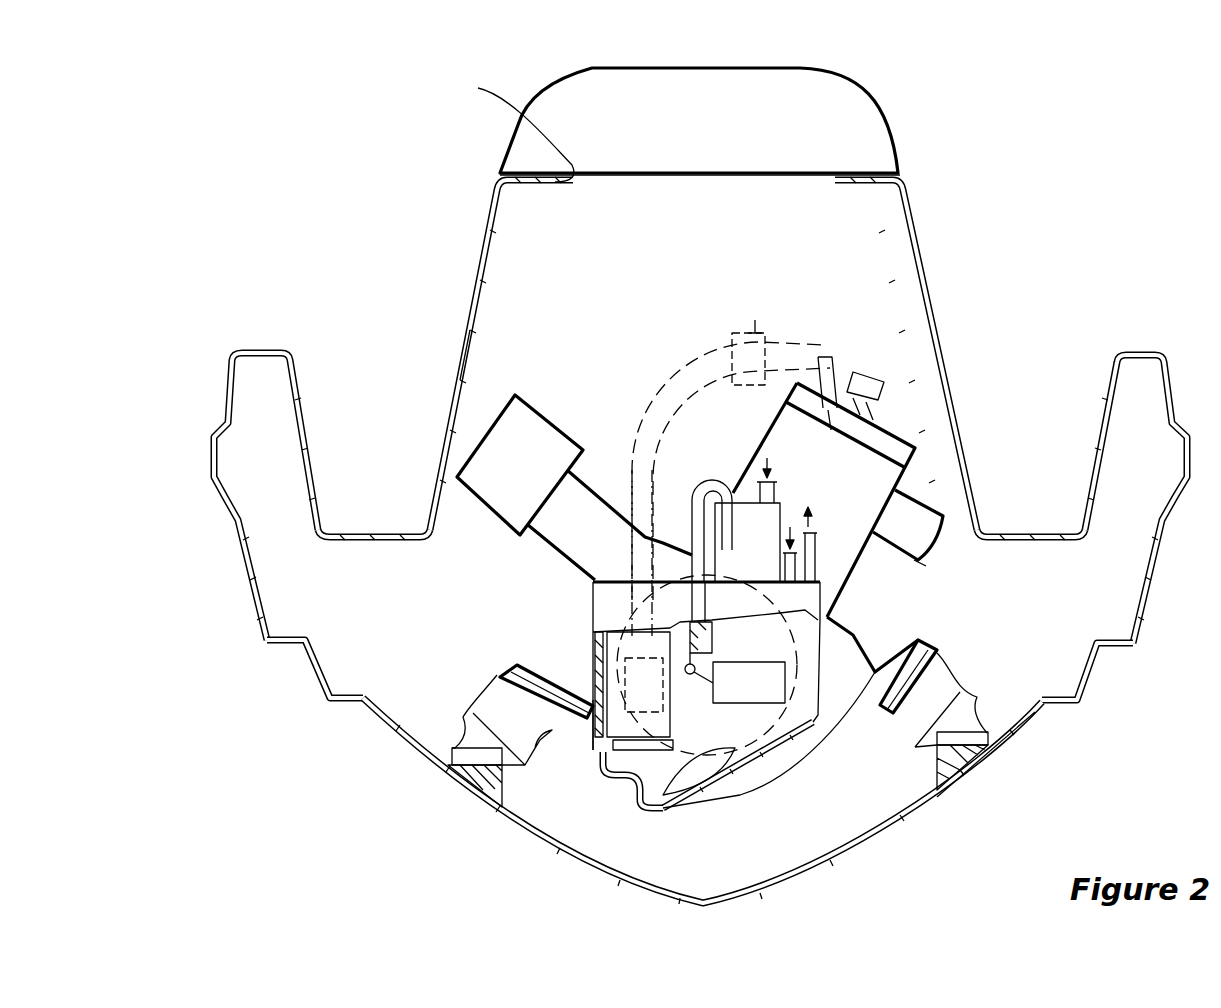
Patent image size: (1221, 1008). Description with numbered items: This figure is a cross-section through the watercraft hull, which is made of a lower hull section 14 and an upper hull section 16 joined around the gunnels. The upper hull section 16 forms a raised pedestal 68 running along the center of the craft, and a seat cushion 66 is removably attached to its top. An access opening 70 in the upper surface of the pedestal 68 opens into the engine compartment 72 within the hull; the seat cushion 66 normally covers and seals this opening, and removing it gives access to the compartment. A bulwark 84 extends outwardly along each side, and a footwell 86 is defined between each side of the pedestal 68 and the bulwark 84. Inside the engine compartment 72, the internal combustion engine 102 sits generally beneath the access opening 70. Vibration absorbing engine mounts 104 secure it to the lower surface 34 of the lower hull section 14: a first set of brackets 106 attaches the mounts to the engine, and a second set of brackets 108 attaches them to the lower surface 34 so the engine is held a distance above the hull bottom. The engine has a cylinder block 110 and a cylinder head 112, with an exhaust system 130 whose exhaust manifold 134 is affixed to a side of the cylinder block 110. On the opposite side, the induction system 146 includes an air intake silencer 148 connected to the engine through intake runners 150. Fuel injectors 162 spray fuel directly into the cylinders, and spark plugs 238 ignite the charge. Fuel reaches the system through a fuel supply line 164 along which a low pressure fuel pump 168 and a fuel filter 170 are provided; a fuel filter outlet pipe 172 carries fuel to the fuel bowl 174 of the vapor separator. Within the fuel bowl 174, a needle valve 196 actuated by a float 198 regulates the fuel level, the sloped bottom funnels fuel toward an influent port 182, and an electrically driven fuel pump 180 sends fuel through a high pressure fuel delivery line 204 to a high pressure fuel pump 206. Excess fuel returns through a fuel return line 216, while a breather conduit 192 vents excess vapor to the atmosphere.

The lower hull section 14 is at (987, 767).
The upper hull section 16 is at (480, 225).
The lower surface 34 is at (825, 868).
The seat cushion 66 is at (876, 130).
The raised pedestal 68 is at (470, 300).
The access opening 70 is at (517, 121).
The engine compartment 72 is at (897, 768).
The bulwark 84 is at (227, 365).
The footwell 86 is at (364, 536).
The internal combustion engine 102 is at (773, 428).
The vibration absorbing engine mounts 104 is at (497, 690).
The first set of brackets 106 is at (512, 668).
The second set of brackets 108 is at (480, 747).
The cylinder block 110 is at (915, 468).
The cylinder head 112 is at (895, 432).
The exhaust system 130 is at (1046, 591).
The exhaust manifold 134 is at (927, 527).
The induction system 146 is at (538, 323).
The air intake silencer 148 is at (502, 437).
The intake runners 150 is at (548, 522).
The fuel injectors 162 is at (865, 372).
The fuel supply line 164 is at (780, 496).
The low pressure fuel pump 168 is at (660, 768).
The fuel filter 170 is at (800, 512).
The fuel filter outlet pipe 172 is at (693, 490).
The fuel bowl 174 is at (590, 706).
The electrically driven fuel pump 180 is at (594, 757).
The influent port 182 is at (702, 768).
The breather conduit 192 is at (813, 550).
The needle valve 196 is at (690, 642).
The float 198 is at (767, 678).
The high pressure fuel delivery line 204 is at (640, 442).
The high pressure fuel pump 206 is at (755, 322).
The fuel return line 216 is at (790, 566).
The spark plugs 238 is at (826, 355).